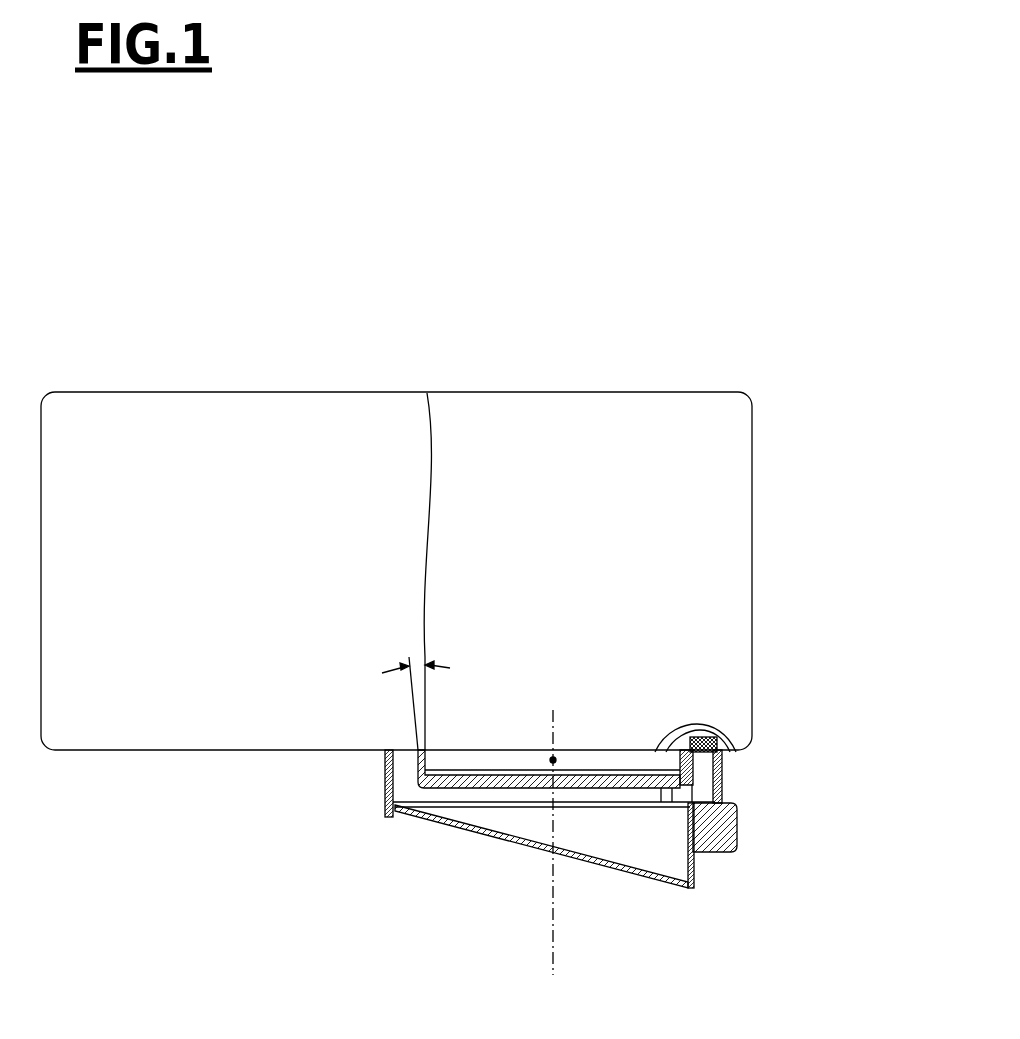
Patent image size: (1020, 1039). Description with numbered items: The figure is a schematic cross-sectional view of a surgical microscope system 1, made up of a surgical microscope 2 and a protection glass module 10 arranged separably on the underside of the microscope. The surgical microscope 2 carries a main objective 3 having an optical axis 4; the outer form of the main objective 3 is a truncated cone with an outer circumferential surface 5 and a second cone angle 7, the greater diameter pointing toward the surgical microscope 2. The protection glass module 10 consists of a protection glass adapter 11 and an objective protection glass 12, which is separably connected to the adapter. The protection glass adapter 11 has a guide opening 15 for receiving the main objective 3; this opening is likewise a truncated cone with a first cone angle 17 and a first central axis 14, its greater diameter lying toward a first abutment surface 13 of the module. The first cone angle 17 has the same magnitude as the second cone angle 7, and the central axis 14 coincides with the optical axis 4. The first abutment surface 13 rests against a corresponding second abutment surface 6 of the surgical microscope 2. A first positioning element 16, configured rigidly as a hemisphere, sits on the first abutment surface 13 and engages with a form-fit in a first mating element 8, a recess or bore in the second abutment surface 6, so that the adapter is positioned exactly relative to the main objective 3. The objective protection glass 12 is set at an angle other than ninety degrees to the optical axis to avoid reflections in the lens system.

The surgical microscope system 1 is at (685, 300).
The surgical microscope 2 is at (170, 392).
The main objective 3 is at (643, 791).
The optical axis 4 is at (554, 940).
The outer circumferential surface 5 is at (724, 791).
The second abutment surface 6 is at (393, 752).
The second cone angle 7 is at (427, 393).
The first mating element 8 is at (708, 738).
The protection glass module 10 is at (744, 843).
The protection glass adapter 11 is at (388, 810).
The objective protection glass 12 is at (503, 838).
The first abutment surface 13 is at (400, 760).
The first central axis 14 is at (553, 842).
The guide opening 15 is at (384, 797).
The first positioning element 16 is at (723, 753).
The first cone angle 17 is at (416, 703).